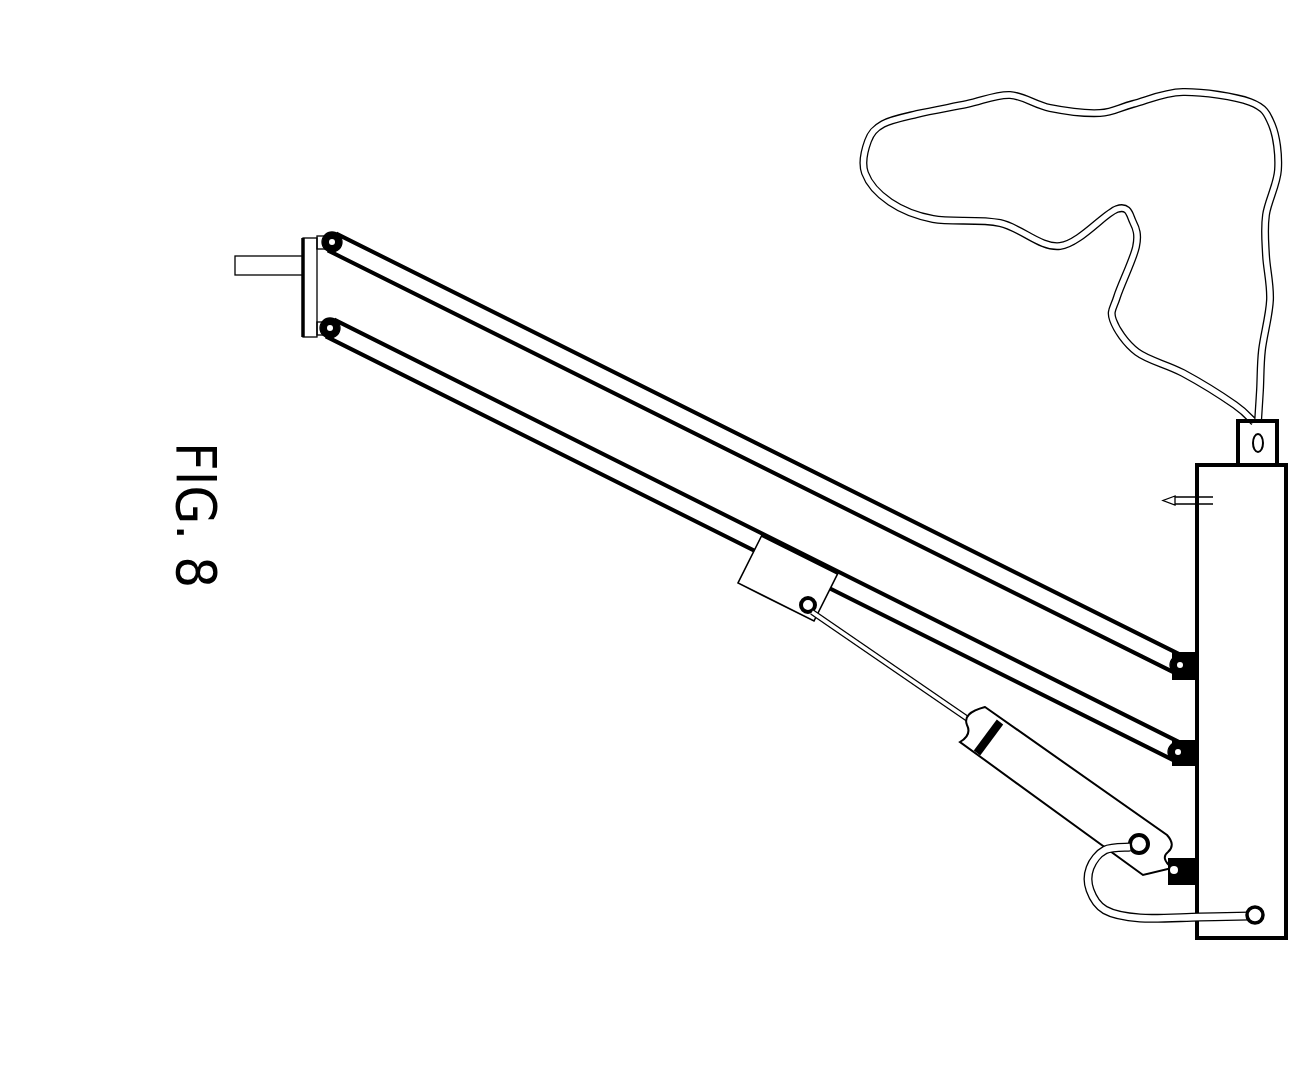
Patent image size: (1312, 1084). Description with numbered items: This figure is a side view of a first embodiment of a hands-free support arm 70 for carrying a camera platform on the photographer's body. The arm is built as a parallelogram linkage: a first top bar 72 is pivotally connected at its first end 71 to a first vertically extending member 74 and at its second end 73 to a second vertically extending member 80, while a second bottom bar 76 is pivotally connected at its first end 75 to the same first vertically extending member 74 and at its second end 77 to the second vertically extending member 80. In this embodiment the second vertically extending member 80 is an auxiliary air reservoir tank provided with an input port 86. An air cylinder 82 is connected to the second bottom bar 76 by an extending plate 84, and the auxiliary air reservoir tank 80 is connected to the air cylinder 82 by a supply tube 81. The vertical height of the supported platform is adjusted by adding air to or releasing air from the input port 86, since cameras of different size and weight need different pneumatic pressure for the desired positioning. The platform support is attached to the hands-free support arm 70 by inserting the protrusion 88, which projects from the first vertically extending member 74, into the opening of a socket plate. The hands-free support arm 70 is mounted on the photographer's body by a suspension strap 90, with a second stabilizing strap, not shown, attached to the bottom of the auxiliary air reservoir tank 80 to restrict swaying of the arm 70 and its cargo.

The hands-free support arm 70 is at (440, 555).
The first end of first top bar 71 is at (336, 238).
The first top bar 72 is at (508, 320).
The second end of first top bar 73 is at (1178, 660).
The first vertically extending member 74 is at (303, 240).
The first end of second bottom bar 75 is at (330, 340).
The second bottom bar 76 is at (656, 503).
The second end of second bottom bar 77 is at (1172, 761).
The second vertically extending member 80 is at (1257, 553).
The supply tube 81 is at (1102, 896).
The air cylinder 82 is at (1000, 775).
The extending plate 84 is at (792, 583).
The input port 86 is at (1164, 499).
The protrusion 88 is at (241, 277).
The suspension strap 90 is at (969, 233).